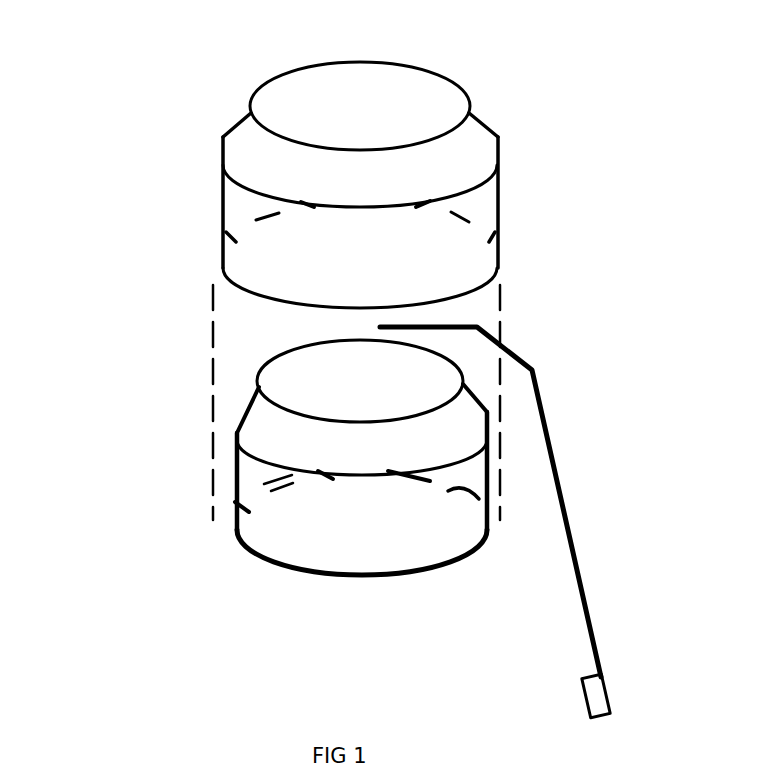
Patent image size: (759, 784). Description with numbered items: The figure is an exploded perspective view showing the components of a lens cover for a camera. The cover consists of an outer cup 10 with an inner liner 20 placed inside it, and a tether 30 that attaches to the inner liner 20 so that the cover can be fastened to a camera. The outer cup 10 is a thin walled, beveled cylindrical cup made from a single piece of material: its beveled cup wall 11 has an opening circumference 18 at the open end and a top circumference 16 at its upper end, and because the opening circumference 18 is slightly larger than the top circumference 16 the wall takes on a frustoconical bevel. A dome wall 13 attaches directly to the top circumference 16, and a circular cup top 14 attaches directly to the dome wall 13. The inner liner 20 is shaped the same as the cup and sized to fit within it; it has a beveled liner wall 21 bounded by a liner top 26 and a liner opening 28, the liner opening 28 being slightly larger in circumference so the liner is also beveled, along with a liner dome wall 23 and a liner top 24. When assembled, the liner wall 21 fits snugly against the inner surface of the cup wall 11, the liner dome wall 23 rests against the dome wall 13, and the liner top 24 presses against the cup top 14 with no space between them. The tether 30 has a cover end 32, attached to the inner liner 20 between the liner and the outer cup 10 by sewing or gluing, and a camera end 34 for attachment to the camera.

The outer cup 10 is at (203, 115).
The beveled cup wall 11 is at (240, 200).
The dome wall 13 is at (472, 140).
The cup top 14 is at (410, 92).
The top circumference 16 is at (499, 170).
The opening circumference 18 is at (495, 273).
The inner liner 20 is at (203, 418).
The beveled liner wall 21 is at (287, 515).
The liner dome wall 23 is at (297, 432).
The liner top 24 is at (337, 375).
The liner top 26 is at (477, 462).
The liner opening 28 is at (477, 543).
The tether 30 is at (562, 452).
The cover end 32 is at (477, 326).
The camera end 34 is at (613, 680).